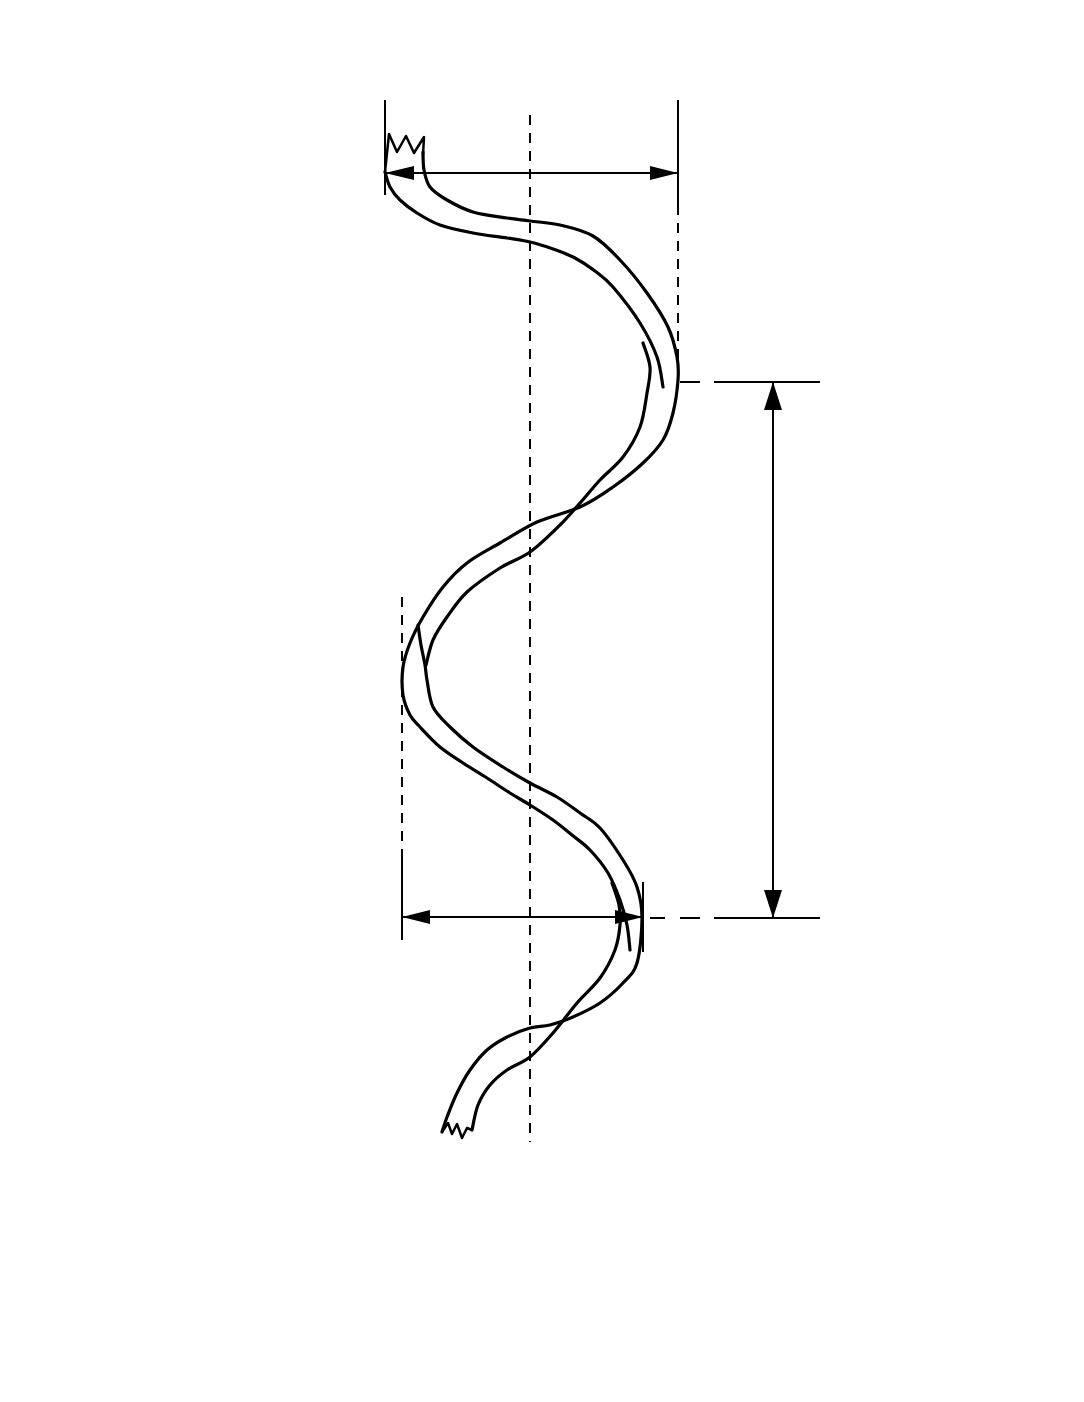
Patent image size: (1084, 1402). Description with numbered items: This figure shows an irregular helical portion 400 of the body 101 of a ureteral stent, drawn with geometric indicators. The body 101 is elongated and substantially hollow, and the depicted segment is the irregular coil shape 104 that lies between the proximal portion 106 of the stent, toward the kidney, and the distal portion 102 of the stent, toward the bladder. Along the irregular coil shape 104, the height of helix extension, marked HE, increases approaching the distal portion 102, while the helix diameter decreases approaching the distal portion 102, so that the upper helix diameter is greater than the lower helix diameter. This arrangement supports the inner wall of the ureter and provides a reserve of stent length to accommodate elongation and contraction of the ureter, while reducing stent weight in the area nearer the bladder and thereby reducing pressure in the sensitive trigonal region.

The irregular helical portion 400 is at (258, 167).
The body 101 is at (545, 798).
The proximal portion 106 is at (410, 97).
The distal portion 102 is at (455, 1147).
The irregular coil shape 104 is at (378, 584).